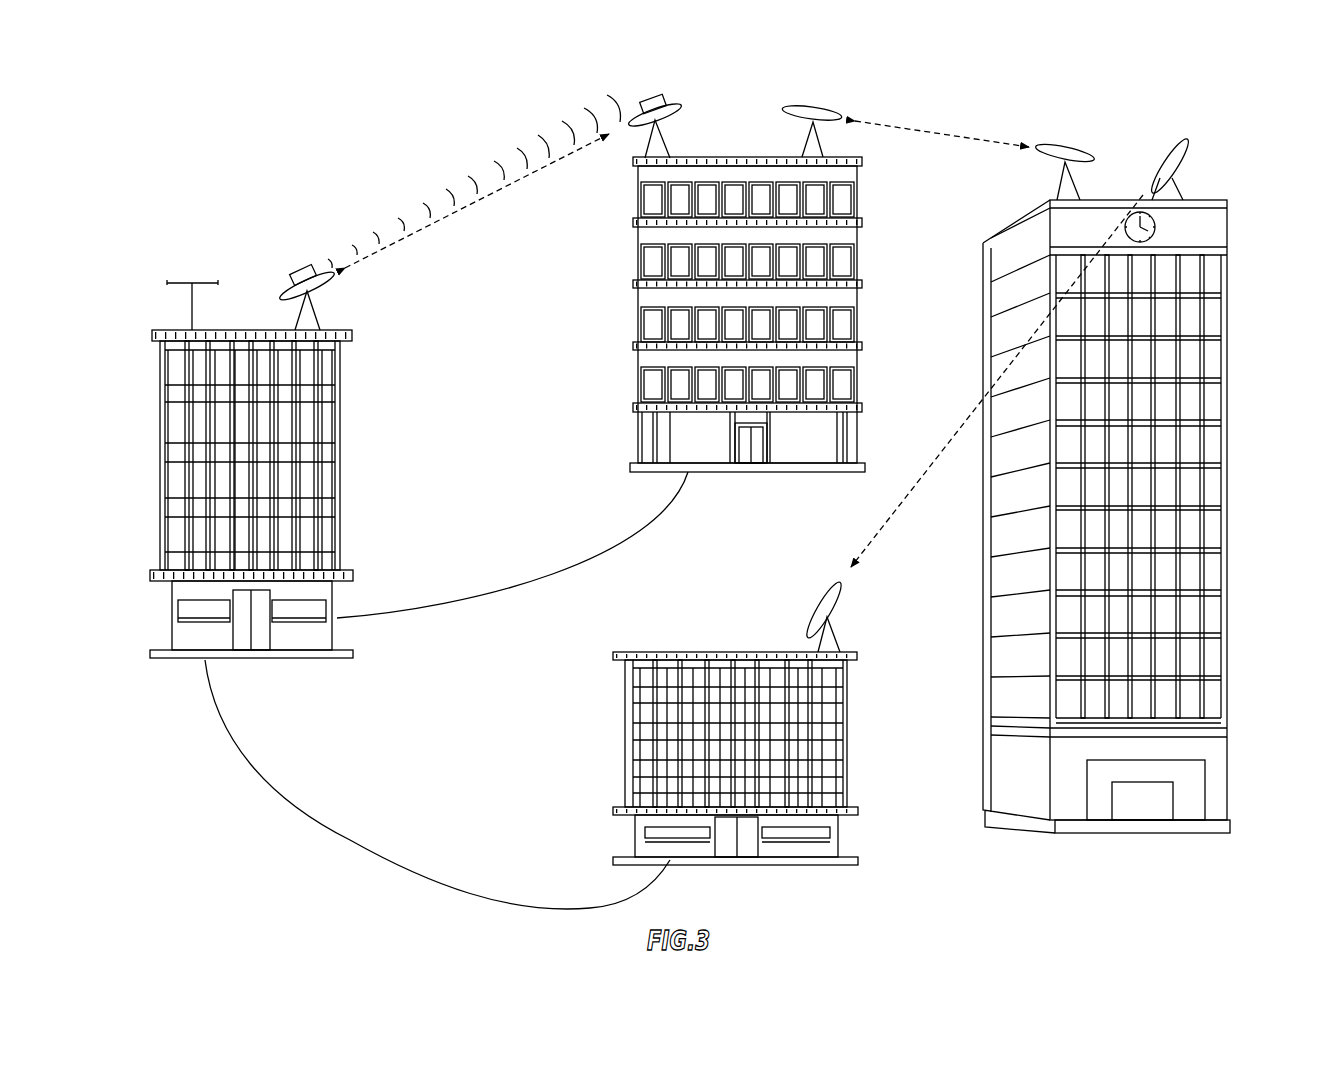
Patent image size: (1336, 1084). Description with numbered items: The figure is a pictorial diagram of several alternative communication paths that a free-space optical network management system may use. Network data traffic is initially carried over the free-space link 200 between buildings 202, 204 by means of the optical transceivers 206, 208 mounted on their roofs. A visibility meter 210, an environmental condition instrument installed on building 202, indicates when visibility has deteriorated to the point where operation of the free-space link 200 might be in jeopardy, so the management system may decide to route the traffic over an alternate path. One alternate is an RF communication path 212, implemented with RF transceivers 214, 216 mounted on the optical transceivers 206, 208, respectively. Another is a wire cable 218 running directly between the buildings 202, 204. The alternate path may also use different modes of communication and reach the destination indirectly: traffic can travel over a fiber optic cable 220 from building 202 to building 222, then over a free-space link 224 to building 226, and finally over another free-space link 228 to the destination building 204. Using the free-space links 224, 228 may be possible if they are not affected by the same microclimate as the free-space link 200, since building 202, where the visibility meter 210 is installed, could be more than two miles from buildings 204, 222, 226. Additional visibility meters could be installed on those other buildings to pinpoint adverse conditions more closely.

The free-space link 200 is at (418, 230).
The building 202 is at (340, 467).
The building 204 is at (857, 293).
The optical transceiver 206 is at (320, 287).
The optical transceiver 208 is at (640, 133).
The visibility meter 210 is at (183, 297).
The RF communication path 212 is at (450, 170).
The RF transceiver 214 is at (293, 273).
The RF transceiver 216 is at (667, 98).
The wire cable 218 is at (543, 577).
The fiber optic cable 220 is at (410, 883).
The building 222 is at (623, 747).
The free-space link 224 is at (877, 537).
The building 226 is at (1228, 323).
The free-space link 228 is at (923, 132).